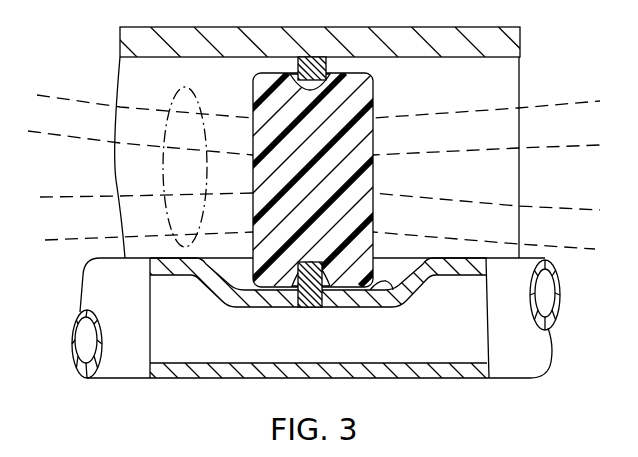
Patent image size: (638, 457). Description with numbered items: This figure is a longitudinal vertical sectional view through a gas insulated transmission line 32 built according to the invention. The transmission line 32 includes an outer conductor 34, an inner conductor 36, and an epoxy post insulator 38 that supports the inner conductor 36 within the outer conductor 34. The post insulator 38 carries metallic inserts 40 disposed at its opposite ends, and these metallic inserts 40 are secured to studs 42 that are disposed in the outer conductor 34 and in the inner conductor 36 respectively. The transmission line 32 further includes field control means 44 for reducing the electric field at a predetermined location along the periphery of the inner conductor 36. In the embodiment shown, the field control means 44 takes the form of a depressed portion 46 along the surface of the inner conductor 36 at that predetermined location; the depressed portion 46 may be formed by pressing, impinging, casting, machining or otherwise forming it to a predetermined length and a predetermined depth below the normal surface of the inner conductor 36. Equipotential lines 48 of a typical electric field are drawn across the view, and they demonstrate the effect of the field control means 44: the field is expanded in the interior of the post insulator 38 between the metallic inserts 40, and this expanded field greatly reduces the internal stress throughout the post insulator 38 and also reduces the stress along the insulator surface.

The transmission line 32 is at (569, 60).
The outer conductor 34 is at (458, 34).
The inner conductor 36 is at (556, 282).
The post insulator 38 is at (374, 175).
The metallic inserts 40 is at (373, 83).
The studs 42 is at (310, 56).
The field control means 44 is at (403, 260).
The depressed portion 46 is at (395, 291).
The equipotential lines 48 is at (189, 90).